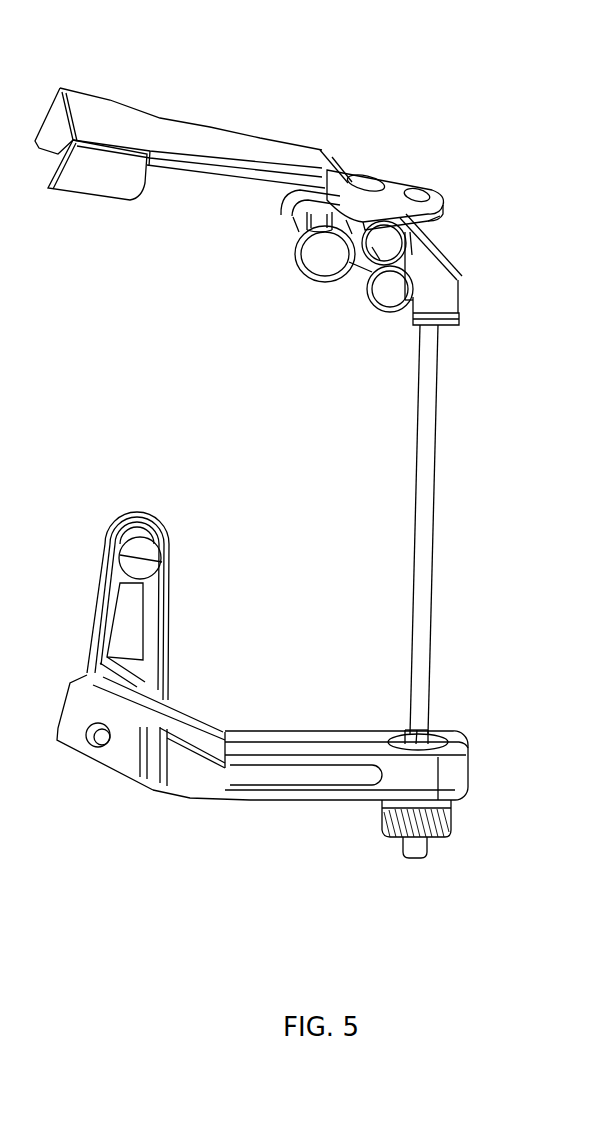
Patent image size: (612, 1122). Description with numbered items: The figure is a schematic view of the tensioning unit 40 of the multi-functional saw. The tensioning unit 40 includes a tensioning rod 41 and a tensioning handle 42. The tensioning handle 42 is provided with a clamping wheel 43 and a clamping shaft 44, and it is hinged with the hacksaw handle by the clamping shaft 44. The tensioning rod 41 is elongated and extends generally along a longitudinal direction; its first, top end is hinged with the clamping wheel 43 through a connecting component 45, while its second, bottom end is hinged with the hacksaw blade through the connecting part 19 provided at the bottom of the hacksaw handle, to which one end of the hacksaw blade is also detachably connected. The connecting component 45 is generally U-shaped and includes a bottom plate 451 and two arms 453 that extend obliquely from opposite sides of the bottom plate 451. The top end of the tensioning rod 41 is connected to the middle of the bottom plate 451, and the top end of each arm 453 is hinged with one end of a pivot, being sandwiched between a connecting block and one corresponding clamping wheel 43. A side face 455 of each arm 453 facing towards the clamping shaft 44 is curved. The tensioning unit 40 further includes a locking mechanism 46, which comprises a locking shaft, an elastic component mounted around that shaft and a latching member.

The first connecting part 19 is at (246, 800).
The tensioning unit 40 is at (443, 177).
The tensioning rod 41 is at (438, 548).
The tensioning handle 42 is at (285, 147).
The clamping wheel 43 is at (440, 223).
The clamping shaft 44 is at (367, 276).
The connecting component 45 is at (547, 252).
The locking mechanism 46 is at (310, 249).
The bottom plate 451 is at (448, 326).
The arms 453 is at (424, 261).
The side face 455 is at (408, 313).